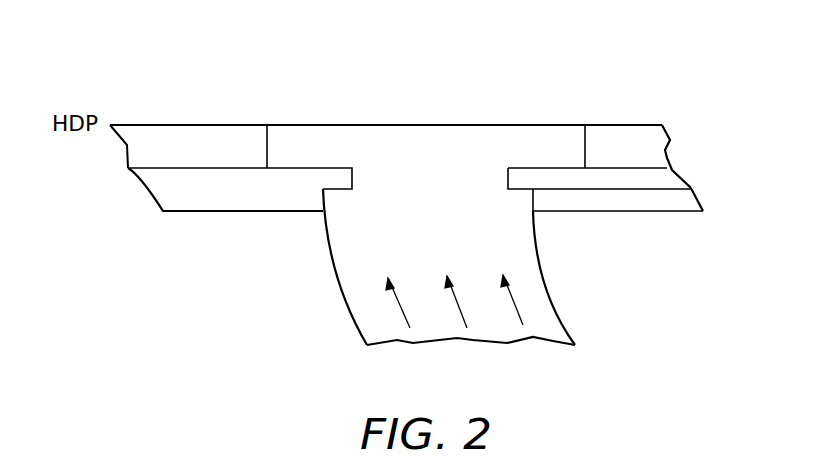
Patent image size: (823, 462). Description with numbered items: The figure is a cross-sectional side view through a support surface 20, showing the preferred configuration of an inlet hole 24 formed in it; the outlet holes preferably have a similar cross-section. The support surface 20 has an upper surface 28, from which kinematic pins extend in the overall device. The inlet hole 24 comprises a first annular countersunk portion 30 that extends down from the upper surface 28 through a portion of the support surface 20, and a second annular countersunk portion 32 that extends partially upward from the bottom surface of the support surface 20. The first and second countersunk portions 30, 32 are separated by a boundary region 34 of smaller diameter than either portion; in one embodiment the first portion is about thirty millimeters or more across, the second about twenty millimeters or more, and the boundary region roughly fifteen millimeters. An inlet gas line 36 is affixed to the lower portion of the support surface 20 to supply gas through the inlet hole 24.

The support surface 20 is at (128, 168).
The inlet hole 24 is at (410, 72).
The upper surface 28 is at (183, 125).
The first annular countersunk portion 30 is at (325, 138).
The second annular countersunk portion 32 is at (518, 208).
The boundary region 34 is at (472, 178).
The inlet gas line 36 is at (337, 280).